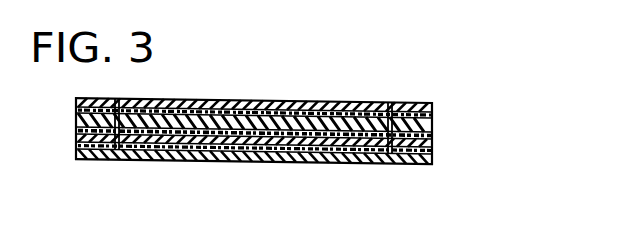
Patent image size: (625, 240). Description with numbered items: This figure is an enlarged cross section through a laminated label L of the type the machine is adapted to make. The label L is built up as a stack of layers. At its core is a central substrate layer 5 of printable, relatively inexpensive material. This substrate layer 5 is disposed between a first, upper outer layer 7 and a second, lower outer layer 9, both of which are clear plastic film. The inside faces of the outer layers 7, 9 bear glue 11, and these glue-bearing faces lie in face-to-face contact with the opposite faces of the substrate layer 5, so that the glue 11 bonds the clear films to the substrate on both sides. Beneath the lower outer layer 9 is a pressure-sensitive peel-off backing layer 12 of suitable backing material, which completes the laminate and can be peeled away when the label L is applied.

The label L is at (278, 100).
The central substrate layer 5 is at (433, 127).
The first outer layer 7 is at (433, 108).
The second outer layer 9 is at (433, 143).
The glue 11 is at (433, 117).
The pressure-sensitive peel-off backing layer 12 is at (367, 164).